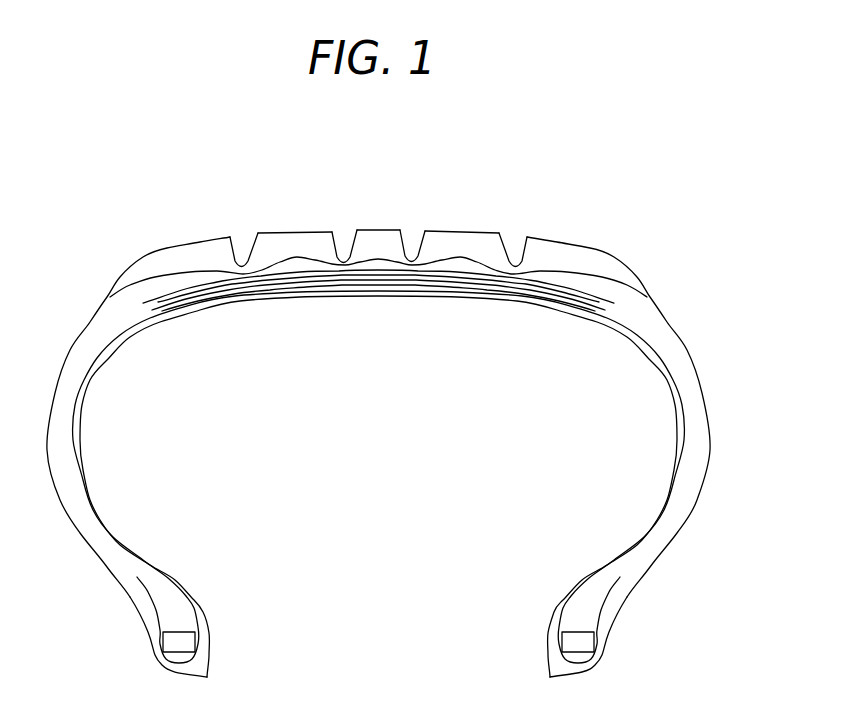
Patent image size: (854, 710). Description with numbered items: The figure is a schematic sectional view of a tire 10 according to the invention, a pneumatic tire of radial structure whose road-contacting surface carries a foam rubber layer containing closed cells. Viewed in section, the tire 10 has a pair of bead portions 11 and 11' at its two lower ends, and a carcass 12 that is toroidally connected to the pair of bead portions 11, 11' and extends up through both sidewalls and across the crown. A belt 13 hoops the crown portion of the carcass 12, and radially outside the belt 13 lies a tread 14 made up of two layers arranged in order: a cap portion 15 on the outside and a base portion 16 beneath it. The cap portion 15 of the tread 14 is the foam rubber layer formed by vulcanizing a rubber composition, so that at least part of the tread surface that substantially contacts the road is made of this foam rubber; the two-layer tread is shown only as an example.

The tire 10 is at (393, 200).
The bead portion 11 is at (125, 637).
The bead portion 11' is at (636, 637).
The carcass 12 is at (82, 435).
The belt 13 is at (463, 277).
The tread 14 is at (458, 226).
The cap portion 15 is at (291, 240).
The base portion 16 is at (463, 265).